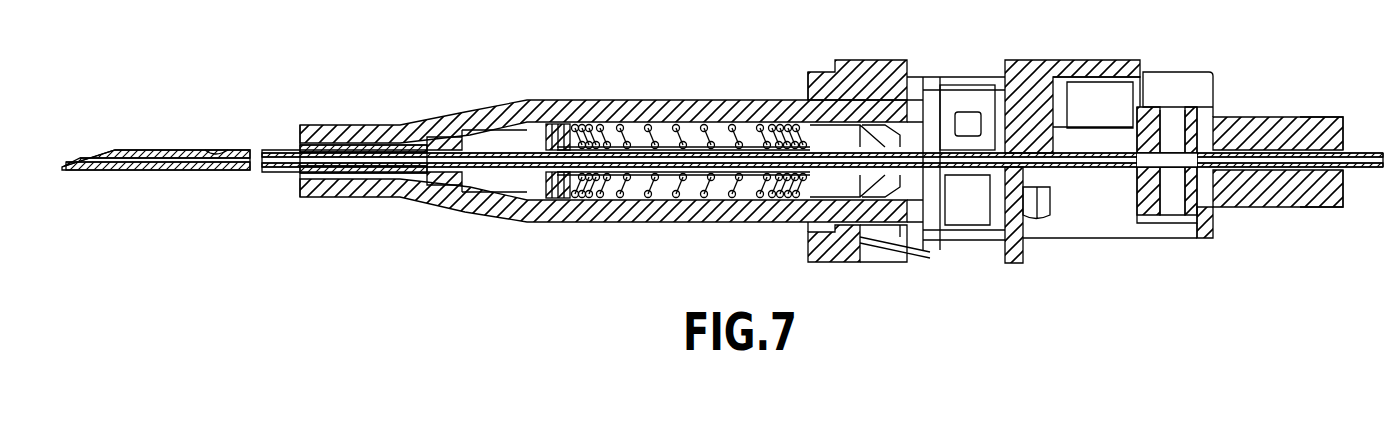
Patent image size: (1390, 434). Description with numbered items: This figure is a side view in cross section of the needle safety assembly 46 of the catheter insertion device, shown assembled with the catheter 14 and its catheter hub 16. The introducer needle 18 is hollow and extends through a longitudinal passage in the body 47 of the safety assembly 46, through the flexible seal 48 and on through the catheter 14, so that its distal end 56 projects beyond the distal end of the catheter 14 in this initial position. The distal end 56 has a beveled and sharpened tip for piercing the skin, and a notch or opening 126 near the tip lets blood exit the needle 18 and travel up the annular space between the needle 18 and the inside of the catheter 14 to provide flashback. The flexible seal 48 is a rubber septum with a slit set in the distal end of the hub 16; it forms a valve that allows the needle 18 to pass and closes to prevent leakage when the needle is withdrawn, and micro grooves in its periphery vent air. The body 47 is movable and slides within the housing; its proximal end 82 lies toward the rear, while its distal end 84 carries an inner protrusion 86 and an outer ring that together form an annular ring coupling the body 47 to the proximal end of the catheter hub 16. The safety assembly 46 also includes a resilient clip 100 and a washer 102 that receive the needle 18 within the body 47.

The catheter 14 is at (287, 172).
The catheter hub 16 is at (651, 223).
The introducer needle 18 is at (68, 170).
The needle safety assembly 46 is at (1283, 112).
The body 47 is at (1118, 60).
The flexible seal 48 is at (568, 197).
The distal end 56 is at (62, 167).
The proximal end 82 is at (836, 62).
The distal end 84 is at (1343, 118).
The inner protrusion 86 is at (887, 128).
The resilient clip 100 is at (982, 110).
The washer 102 is at (1165, 225).
The notch or opening 126 is at (220, 152).